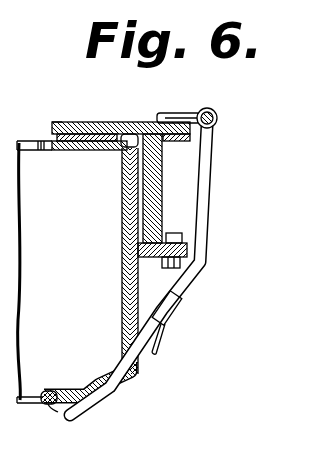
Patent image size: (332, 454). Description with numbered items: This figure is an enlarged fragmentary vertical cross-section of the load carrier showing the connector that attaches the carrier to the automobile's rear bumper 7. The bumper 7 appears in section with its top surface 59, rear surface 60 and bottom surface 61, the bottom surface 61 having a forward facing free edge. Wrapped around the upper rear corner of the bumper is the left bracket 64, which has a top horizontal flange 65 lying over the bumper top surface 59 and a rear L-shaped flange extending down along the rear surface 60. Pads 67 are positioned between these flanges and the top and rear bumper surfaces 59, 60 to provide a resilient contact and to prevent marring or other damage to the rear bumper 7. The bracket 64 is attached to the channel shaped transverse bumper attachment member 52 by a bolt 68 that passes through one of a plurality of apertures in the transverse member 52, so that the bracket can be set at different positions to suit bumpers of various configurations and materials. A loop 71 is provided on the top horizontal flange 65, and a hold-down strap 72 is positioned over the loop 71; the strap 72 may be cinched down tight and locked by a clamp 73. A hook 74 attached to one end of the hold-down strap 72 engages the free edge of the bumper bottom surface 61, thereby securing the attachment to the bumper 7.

The rear bumper 7 is at (46, 140).
The transverse bumper attachment member 52 is at (162, 174).
The top surface of bumper 59 is at (108, 122).
The rear surface of bumper 60 is at (135, 283).
The bottom surface of bumper 61 is at (103, 397).
The left bracket 64 is at (50, 122).
The top horizontal flange 65 is at (89, 122).
The pads 67 is at (122, 150).
The bolt 68 is at (175, 233).
The loop 71 is at (184, 113).
The hold-down strap 72 is at (215, 151).
The clamp 73 is at (180, 302).
The hook 74 is at (45, 408).